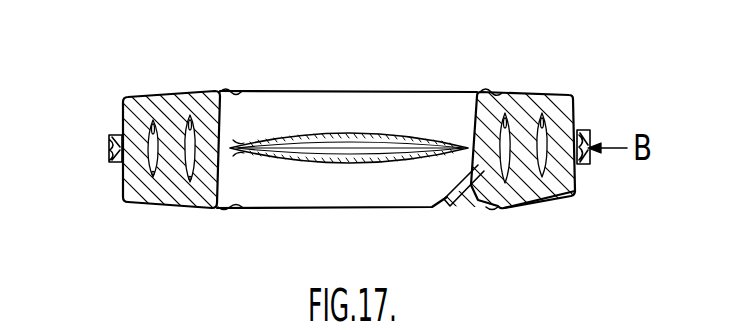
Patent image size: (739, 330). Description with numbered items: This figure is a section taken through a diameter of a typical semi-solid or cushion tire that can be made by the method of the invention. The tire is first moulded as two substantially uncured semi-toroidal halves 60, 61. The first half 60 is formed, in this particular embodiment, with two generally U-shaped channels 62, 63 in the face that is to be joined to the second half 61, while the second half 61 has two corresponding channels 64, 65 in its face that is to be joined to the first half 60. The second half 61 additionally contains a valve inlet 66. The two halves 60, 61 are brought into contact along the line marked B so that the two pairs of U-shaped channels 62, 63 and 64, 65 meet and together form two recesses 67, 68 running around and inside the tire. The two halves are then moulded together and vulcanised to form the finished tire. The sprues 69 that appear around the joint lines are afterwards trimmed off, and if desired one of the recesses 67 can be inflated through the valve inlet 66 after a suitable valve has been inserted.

The semi-toroidal half 60 is at (538, 91).
The semi-toroidal half 61 is at (545, 203).
The U-shaped channel 62 is at (577, 110).
The U-shaped channel 63 is at (503, 112).
The channel 64 is at (189, 184).
The channel 65 is at (153, 178).
The valve inlet 66 is at (472, 210).
The recess 67 is at (189, 114).
The recess 68 is at (124, 116).
The sprues 69 is at (108, 147).